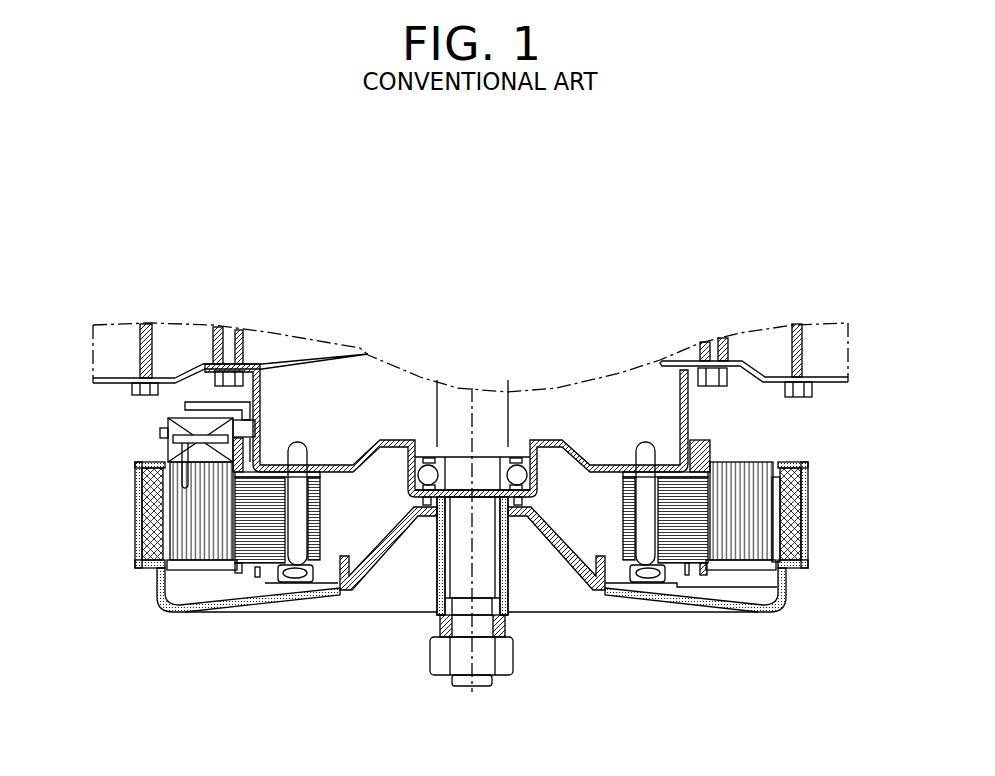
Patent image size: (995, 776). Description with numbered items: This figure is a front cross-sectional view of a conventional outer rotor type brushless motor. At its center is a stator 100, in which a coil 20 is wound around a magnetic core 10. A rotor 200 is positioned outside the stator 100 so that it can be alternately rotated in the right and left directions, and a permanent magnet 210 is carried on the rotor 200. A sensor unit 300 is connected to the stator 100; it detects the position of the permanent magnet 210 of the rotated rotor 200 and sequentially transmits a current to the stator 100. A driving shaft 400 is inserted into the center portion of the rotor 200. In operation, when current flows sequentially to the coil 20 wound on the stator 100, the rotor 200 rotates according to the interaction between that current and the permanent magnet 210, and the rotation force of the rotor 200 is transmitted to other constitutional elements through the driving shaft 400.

The driving shaft 400 is at (430, 405).
The stator 100 is at (794, 451).
The rotor 200 is at (798, 606).
The permanent magnet 210 is at (790, 533).
The coil 20 is at (192, 563).
The magnetic core 10 is at (673, 552).
The sensor unit 300 is at (154, 428).